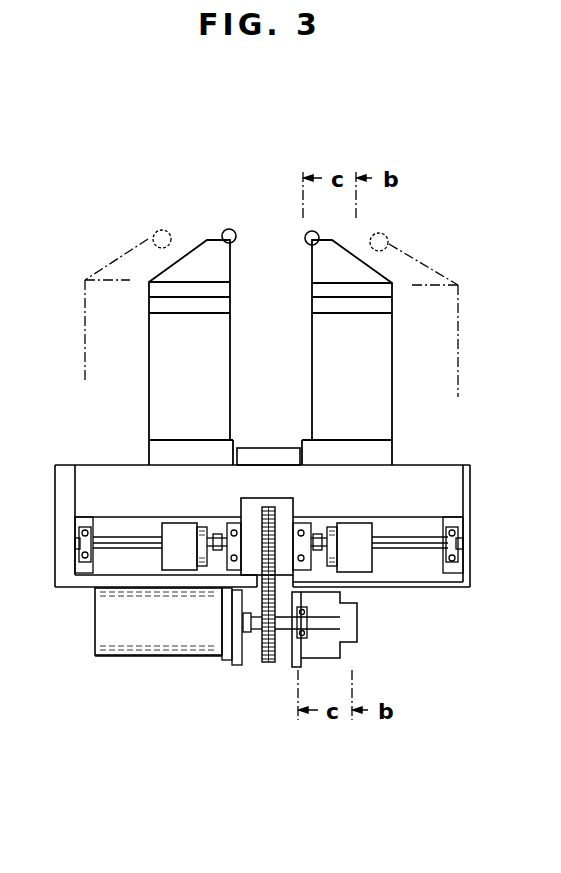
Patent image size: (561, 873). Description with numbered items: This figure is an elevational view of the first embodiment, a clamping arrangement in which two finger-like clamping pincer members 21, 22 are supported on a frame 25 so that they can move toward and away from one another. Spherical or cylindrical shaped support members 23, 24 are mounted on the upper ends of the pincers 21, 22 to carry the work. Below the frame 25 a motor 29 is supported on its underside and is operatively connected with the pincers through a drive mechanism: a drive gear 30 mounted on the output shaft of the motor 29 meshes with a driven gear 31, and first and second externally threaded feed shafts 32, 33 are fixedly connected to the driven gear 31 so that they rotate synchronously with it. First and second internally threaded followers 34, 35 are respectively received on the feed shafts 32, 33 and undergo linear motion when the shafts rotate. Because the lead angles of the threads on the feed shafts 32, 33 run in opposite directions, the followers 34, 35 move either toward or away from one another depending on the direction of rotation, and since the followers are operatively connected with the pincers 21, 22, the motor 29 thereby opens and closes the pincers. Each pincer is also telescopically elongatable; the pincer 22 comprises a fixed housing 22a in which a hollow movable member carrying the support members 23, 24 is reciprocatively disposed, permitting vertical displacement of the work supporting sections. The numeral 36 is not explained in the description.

The clamping pincer member 21 is at (396, 375).
The clamping pincer member 22 is at (149, 393).
The fixed housing 22a is at (158, 353).
The support member 23 is at (318, 231).
The support member 24 is at (226, 232).
The frame 25 is at (420, 468).
The motor 29 is at (152, 648).
The drive gear 30 is at (262, 652).
The driven gear 31 is at (281, 640).
The first feed shaft 32 is at (402, 548).
The second feed shaft 33 is at (138, 545).
The first internally threaded follower 34 is at (350, 556).
The second internally threaded follower 35 is at (178, 556).
The motor mounting plate 36 is at (186, 659).